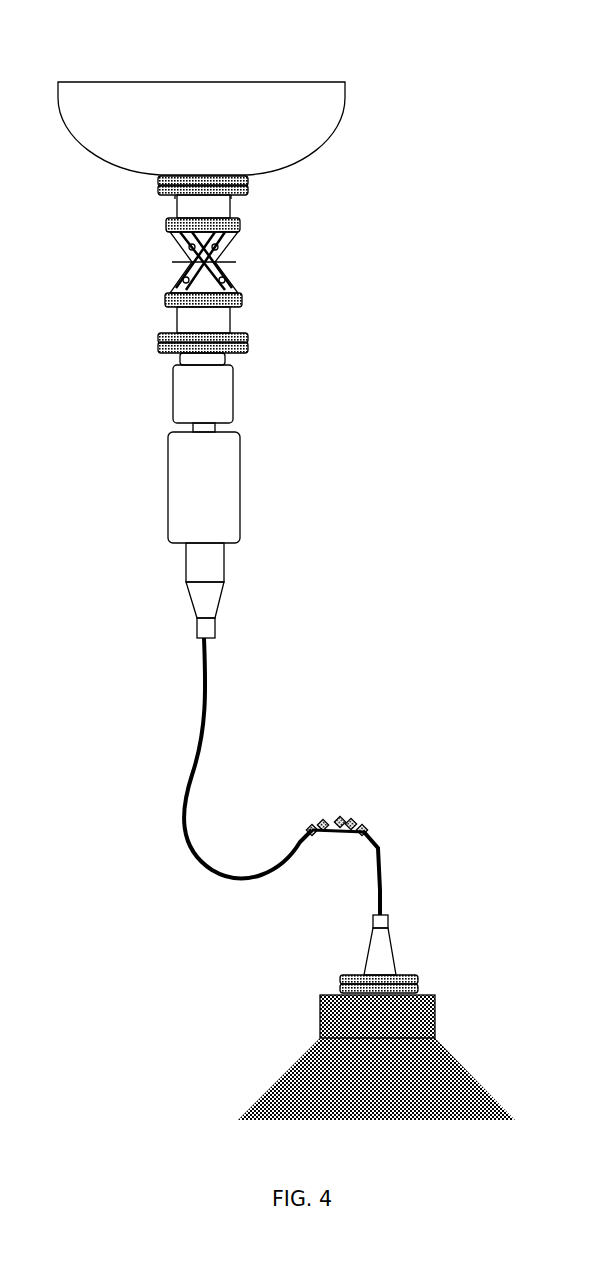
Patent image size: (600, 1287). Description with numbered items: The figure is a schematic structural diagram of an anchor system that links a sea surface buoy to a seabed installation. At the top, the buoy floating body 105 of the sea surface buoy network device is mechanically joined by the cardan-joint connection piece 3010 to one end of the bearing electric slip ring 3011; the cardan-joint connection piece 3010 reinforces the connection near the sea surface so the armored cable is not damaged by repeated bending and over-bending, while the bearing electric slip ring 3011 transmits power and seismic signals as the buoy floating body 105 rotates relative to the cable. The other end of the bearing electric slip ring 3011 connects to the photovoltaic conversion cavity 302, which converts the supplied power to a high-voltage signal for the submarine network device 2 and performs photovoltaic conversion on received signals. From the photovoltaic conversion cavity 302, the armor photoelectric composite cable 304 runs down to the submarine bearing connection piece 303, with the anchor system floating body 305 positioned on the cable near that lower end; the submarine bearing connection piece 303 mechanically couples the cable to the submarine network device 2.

The buoy floating body 105 is at (311, 115).
The cardan-joint connection piece 3010 is at (232, 270).
The bearing electric slip ring 3011 is at (218, 398).
The photovoltaic conversion cavity 302 is at (218, 498).
The armor photoelectric composite cable 304 is at (188, 802).
The anchor system floating body 305 is at (345, 820).
The submarine bearing connection piece 303 is at (383, 966).
The submarine network device 2 is at (412, 1030).